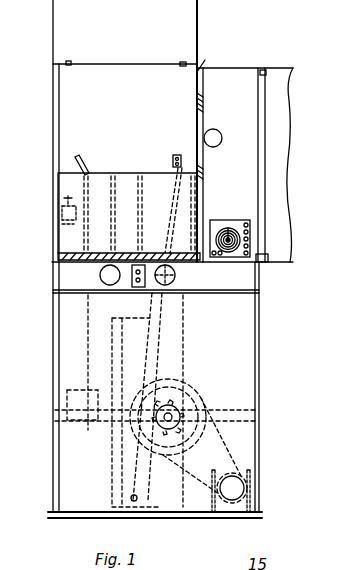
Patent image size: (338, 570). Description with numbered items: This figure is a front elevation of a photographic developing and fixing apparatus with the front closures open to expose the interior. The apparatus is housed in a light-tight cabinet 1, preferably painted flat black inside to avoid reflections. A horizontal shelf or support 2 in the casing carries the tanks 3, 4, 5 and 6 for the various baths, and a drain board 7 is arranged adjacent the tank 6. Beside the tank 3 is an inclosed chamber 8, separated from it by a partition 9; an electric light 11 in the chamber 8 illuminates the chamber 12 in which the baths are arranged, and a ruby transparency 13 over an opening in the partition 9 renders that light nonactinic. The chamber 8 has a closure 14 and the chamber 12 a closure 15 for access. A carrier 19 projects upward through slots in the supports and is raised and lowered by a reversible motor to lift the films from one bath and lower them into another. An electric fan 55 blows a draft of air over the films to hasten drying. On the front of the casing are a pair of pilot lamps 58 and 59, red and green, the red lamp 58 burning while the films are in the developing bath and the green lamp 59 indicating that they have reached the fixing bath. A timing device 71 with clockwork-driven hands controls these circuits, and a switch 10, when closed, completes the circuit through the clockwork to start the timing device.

The light-tight cabinet 1 is at (276, 151).
The shelf or support 2 is at (62, 258).
The tank 3 is at (184, 176).
The tank 4 is at (153, 184).
The tank 5 is at (128, 183).
The tank 6 is at (103, 183).
The drain board 7 is at (75, 164).
The inclosed chamber 8 is at (252, 76).
The partition 9 is at (200, 187).
The switch 10 is at (140, 287).
The electric light 11 is at (228, 115).
The chamber 12 is at (196, 74).
The ruby transparency 13 is at (197, 136).
The closure 14 is at (283, 203).
The closure 15 is at (198, 19).
The carrier 19 is at (176, 155).
The electric fan 55 is at (60, 222).
The pilot lamp 58 is at (101, 276).
The pilot lamp 59 is at (176, 276).
The timing device 71 is at (230, 230).